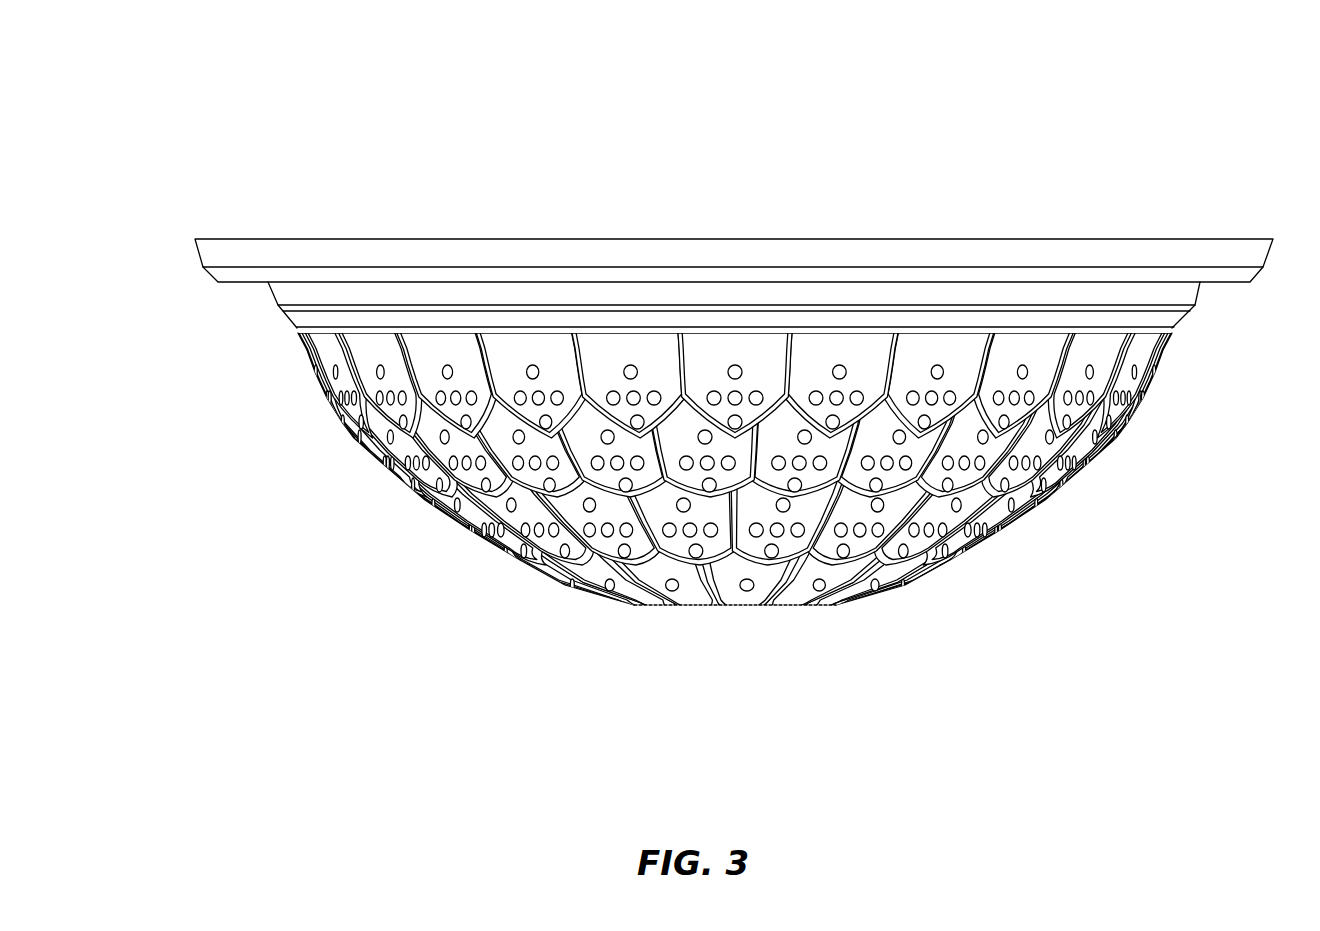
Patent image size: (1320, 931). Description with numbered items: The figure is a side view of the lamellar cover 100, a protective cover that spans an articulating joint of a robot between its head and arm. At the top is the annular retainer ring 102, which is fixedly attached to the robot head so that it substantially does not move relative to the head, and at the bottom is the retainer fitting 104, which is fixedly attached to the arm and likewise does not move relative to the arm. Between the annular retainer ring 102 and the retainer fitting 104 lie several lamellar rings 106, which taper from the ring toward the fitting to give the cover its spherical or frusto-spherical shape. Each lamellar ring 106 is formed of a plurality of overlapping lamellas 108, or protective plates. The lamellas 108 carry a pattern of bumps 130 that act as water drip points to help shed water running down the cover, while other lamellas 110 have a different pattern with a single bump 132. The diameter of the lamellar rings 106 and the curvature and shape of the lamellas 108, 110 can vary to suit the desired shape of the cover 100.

The lamellar cover 100 is at (703, 364).
The annular retainer ring 102 is at (1068, 239).
The retainer fitting 104 is at (638, 605).
The lamellar ring 106 is at (786, 504).
The lamella 108 is at (1110, 365).
The lamella 110 is at (887, 568).
The bump 130 is at (1103, 407).
The single bump 132 is at (877, 595).